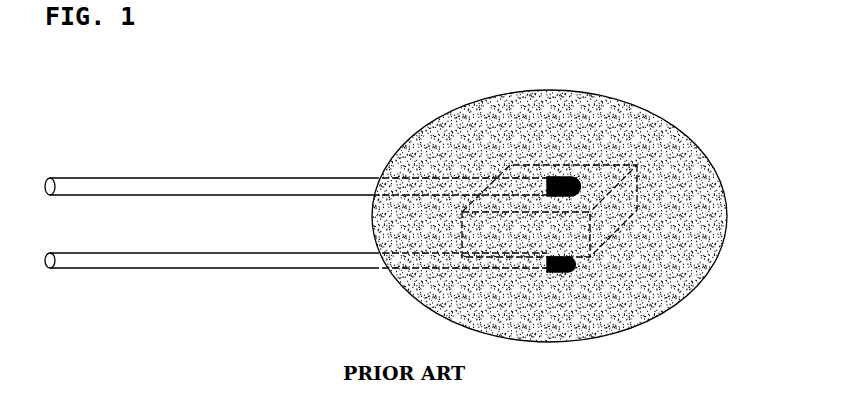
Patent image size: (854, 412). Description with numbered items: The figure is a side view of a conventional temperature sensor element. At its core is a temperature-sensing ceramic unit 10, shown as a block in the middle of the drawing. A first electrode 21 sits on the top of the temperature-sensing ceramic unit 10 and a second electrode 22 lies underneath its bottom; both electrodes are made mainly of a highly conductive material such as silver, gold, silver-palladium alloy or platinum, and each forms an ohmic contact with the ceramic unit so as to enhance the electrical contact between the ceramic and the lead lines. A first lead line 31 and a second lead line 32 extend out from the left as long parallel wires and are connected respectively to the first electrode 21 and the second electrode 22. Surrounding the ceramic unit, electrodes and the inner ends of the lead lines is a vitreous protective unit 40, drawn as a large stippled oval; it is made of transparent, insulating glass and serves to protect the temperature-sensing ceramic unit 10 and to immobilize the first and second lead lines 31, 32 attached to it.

The temperature-sensing ceramic unit 10 is at (640, 166).
The first electrode 21 is at (626, 160).
The second electrode 22 is at (622, 244).
The first lead line 31 is at (268, 185).
The second lead line 32 is at (271, 263).
The vitreous protective unit 40 is at (480, 103).